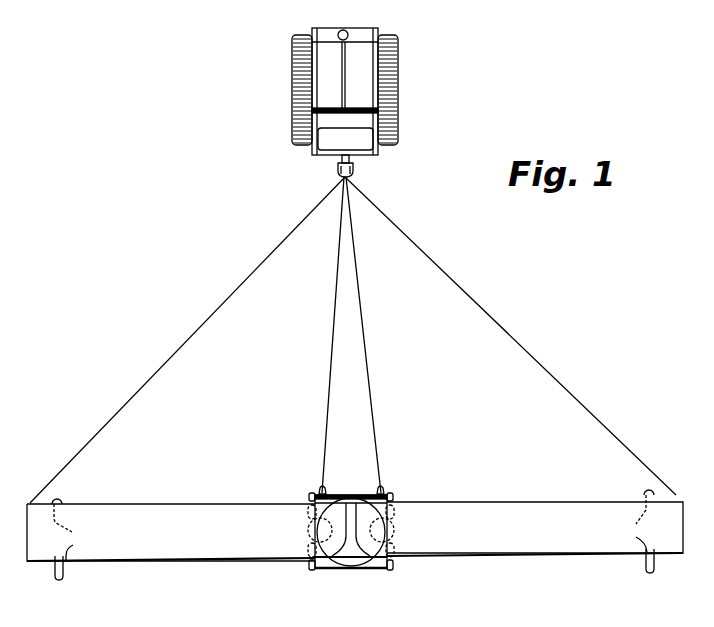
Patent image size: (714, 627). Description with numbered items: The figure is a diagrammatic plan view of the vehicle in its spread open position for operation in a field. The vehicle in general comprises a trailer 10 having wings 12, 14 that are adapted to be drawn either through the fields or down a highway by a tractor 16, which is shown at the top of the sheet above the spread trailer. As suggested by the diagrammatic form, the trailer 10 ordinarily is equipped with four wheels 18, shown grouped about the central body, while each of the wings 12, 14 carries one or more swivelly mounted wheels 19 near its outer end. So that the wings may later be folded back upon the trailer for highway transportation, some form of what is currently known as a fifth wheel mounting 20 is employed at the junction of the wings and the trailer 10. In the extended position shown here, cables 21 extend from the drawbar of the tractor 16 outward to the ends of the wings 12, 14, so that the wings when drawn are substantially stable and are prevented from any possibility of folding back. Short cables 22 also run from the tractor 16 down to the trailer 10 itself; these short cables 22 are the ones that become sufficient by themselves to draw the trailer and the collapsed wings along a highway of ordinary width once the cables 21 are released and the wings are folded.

The trailer 10 is at (336, 569).
The wing 12 is at (192, 559).
The wing 14 is at (572, 555).
The tractor 16 is at (293, 79).
The wheels 18 is at (310, 495).
The swivelly mounted wheels 19 is at (74, 534).
The fifth wheel mounting 20 is at (349, 490).
The cables 21 is at (146, 374).
The short cables 22 is at (372, 416).